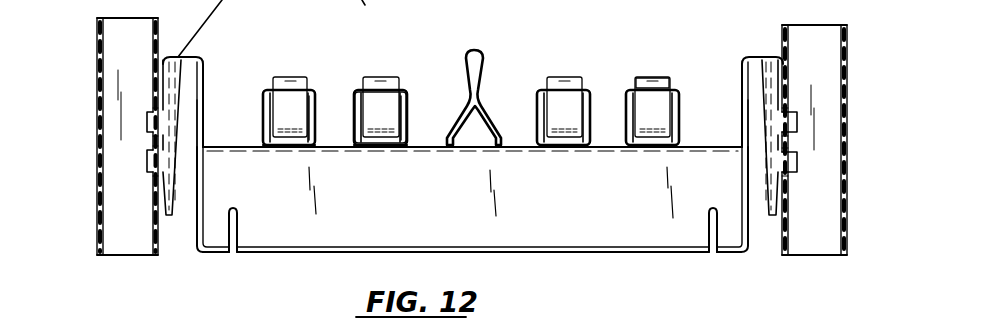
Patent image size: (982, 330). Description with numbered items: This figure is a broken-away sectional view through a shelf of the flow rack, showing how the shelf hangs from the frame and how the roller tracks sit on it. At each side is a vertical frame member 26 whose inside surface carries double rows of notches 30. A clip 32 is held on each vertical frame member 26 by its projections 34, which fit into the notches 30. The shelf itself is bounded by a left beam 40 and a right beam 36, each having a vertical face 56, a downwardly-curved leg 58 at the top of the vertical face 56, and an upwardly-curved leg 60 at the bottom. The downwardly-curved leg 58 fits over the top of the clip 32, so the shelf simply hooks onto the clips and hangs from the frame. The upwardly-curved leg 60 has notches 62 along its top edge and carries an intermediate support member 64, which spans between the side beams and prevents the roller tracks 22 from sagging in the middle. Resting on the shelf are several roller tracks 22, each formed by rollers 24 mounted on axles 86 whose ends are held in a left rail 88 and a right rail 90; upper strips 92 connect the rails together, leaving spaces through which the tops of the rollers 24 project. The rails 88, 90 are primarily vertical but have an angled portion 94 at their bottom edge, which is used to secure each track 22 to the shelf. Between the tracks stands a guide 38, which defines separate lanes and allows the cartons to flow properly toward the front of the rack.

The roller track 22 is at (625, 92).
The roller 24 is at (292, 77).
The vertical frame member 26 is at (97, 23).
The notch 30 is at (160, 33).
The clip 32 is at (175, 218).
The projection 34 is at (147, 128).
The right beam 36 is at (742, 78).
The guide 38 is at (479, 50).
The left beam 40 is at (201, 58).
The vertical face 56 is at (205, 118).
The downwardly-curved leg 58 is at (757, 56).
The upwardly-curved leg 60 is at (228, 253).
The notch 62 is at (236, 216).
The intermediate support member 64 is at (498, 251).
The axle 86 is at (406, 95).
The left rail 88 is at (262, 95).
The right rail 90 is at (317, 125).
The upper strip 92 is at (665, 77).
The angled portion 94 is at (326, 152).